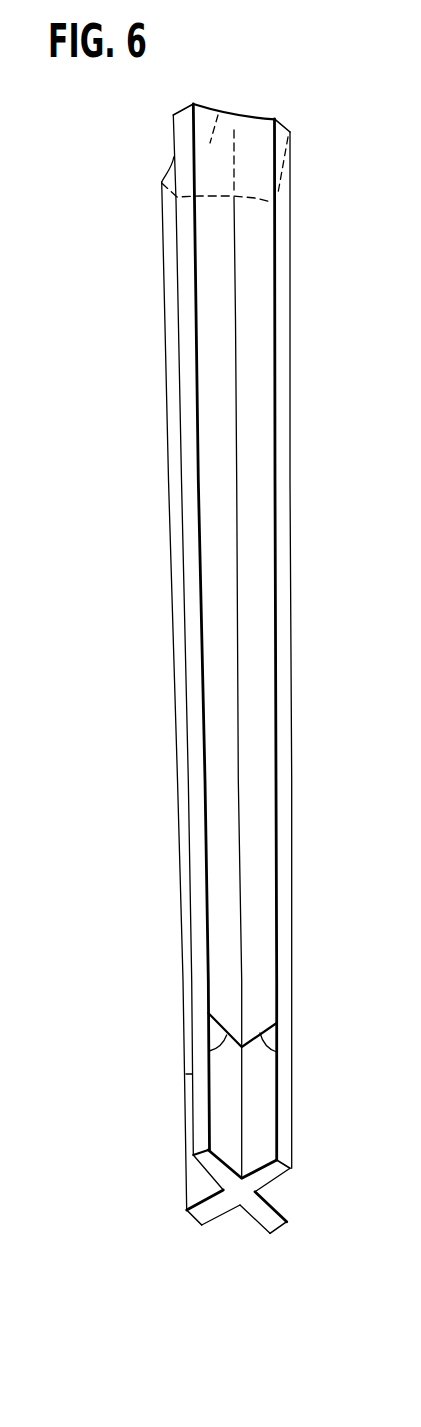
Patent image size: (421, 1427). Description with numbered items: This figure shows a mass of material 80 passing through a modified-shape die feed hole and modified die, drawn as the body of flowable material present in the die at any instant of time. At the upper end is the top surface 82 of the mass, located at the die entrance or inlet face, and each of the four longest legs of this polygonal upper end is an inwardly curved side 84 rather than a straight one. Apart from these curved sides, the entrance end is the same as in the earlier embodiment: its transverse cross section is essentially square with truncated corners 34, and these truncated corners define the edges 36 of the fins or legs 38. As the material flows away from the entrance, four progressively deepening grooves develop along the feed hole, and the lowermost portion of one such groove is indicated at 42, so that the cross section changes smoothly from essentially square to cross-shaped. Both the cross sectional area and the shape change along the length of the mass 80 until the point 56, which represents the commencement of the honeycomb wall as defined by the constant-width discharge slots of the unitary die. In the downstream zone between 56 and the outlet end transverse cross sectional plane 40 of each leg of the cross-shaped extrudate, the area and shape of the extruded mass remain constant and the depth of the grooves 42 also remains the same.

The mass of material 80 is at (229, 651).
The top surface 82 is at (218, 108).
The inwardly curved side 84 is at (243, 111).
The truncated corners 34 is at (285, 120).
The edges 36 is at (188, 533).
The fins or legs 38 is at (227, 987).
The outlet end transverse cross sectional plane 40 is at (212, 1213).
The lowermost portion of groove 42 is at (238, 728).
The commencement of honeycomb wall 56 is at (202, 1048).